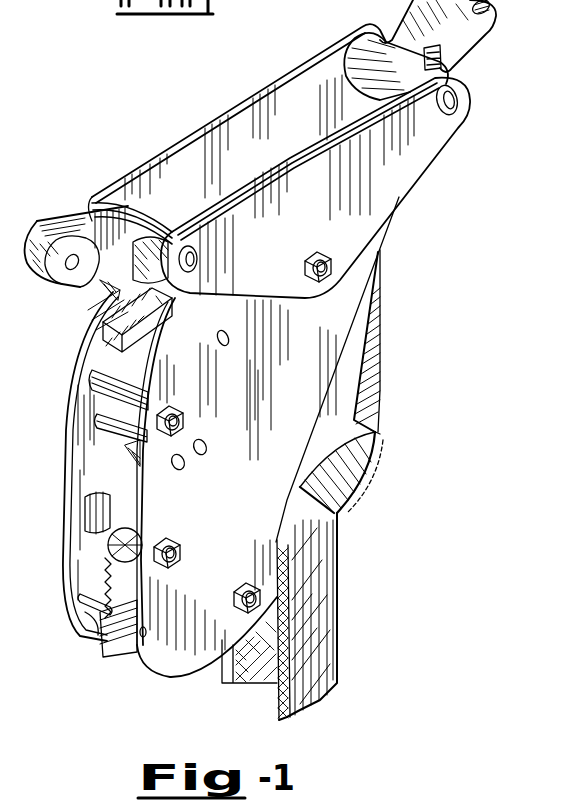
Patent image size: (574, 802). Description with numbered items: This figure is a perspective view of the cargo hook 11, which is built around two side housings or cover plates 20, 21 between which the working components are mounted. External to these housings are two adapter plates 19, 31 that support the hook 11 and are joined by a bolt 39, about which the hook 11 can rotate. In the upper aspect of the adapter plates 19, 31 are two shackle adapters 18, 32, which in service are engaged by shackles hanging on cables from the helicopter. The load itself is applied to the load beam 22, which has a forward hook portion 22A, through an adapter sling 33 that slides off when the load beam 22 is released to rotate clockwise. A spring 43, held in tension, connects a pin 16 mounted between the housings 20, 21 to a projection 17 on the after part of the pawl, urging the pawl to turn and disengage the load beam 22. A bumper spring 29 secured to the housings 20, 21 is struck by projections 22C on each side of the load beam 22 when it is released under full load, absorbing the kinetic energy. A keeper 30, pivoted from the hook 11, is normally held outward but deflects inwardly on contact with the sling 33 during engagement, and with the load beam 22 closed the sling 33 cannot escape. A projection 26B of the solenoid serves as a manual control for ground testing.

The hook 11 is at (220, 513).
The pin 16 is at (83, 637).
The projection 17 is at (100, 586).
The shackle adapter 18 is at (487, 32).
The adapter plate 19 is at (232, 108).
The side housing 20 is at (166, 677).
The side housing 21 is at (70, 381).
The load beam 22 is at (364, 489).
The forward hook portion 22A is at (377, 436).
The projections 22C is at (95, 628).
The projection 26B is at (103, 312).
The bumper spring 29 is at (127, 450).
The keeper 30 is at (384, 356).
The adapter plate 31 is at (416, 160).
The shackle adapter 32 is at (33, 224).
The adapter sling 33 is at (340, 623).
The bolt 39 is at (322, 256).
The spring 43 is at (105, 584).